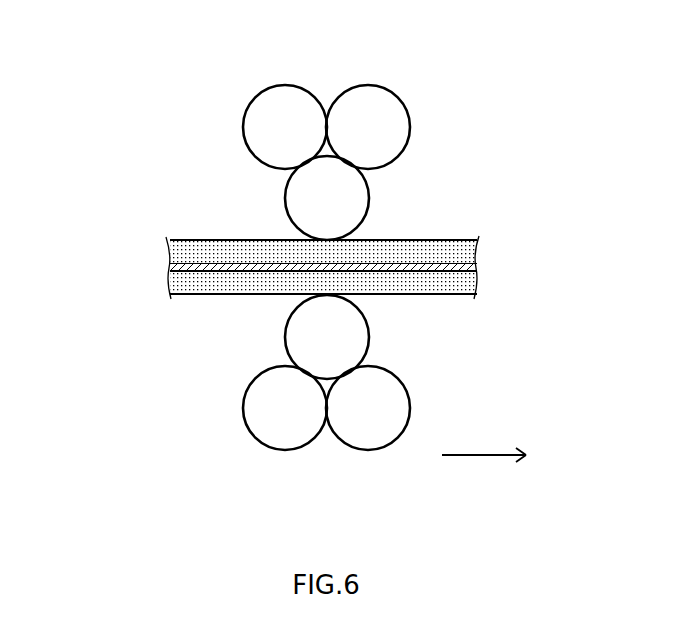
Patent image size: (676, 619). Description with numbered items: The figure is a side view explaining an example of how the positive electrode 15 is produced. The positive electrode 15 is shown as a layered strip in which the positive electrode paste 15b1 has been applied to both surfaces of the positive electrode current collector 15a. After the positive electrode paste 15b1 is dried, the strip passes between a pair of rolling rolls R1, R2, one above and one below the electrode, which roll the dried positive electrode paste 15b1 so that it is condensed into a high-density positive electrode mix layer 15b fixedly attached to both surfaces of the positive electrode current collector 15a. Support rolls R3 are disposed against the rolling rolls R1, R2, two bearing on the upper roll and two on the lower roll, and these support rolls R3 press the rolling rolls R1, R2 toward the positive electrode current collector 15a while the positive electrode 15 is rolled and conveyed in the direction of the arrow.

The positive electrode 15 is at (293, 253).
The positive electrode current collector 15a is at (169, 268).
The positive electrode mix layer 15b is at (449, 240).
The positive electrode paste 15b1 is at (167, 243).
The rolling roll R1 is at (285, 200).
The rolling roll R2 is at (285, 330).
The support roll R3 is at (287, 85).